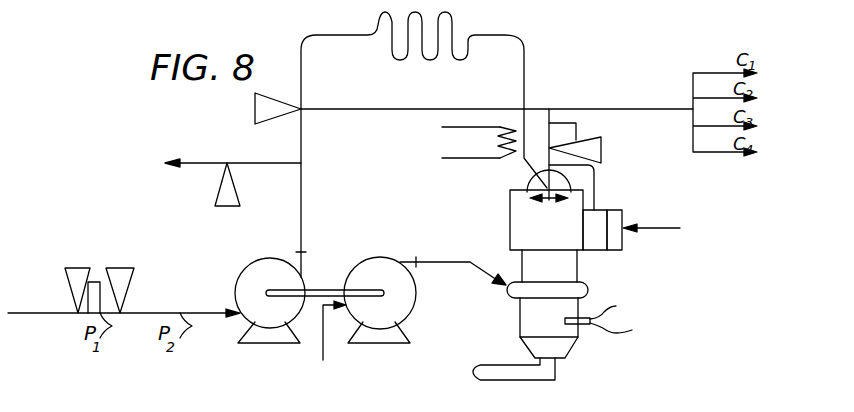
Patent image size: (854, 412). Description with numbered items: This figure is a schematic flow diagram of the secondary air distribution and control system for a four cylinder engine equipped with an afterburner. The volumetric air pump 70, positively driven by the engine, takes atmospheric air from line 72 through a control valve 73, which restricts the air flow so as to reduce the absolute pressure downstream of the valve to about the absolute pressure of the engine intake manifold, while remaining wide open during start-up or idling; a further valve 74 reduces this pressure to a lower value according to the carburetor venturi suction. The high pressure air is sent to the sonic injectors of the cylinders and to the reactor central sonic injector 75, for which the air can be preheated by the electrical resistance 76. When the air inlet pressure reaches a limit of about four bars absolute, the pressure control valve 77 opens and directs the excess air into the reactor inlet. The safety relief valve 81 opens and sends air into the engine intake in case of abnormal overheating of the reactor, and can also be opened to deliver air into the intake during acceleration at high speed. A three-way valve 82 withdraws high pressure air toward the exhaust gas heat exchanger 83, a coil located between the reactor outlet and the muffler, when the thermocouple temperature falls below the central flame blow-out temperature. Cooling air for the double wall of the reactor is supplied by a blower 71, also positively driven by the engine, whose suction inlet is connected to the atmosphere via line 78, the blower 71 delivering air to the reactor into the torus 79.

The volumetric air pump 70 is at (244, 276).
The blower 71 is at (412, 300).
The line 72 is at (48, 313).
The control valve 73 is at (80, 268).
The valve 74 is at (116, 268).
The reactor central sonic injector 75 is at (536, 200).
The electrical resistance 76 is at (442, 158).
The pressure control valve 77 is at (602, 148).
The line 78 is at (323, 348).
The torus 79 is at (507, 298).
The safety relief valve 81 is at (215, 196).
The three-way valve 82 is at (255, 124).
The exhaust gas heat exchanger 83 is at (400, 58).